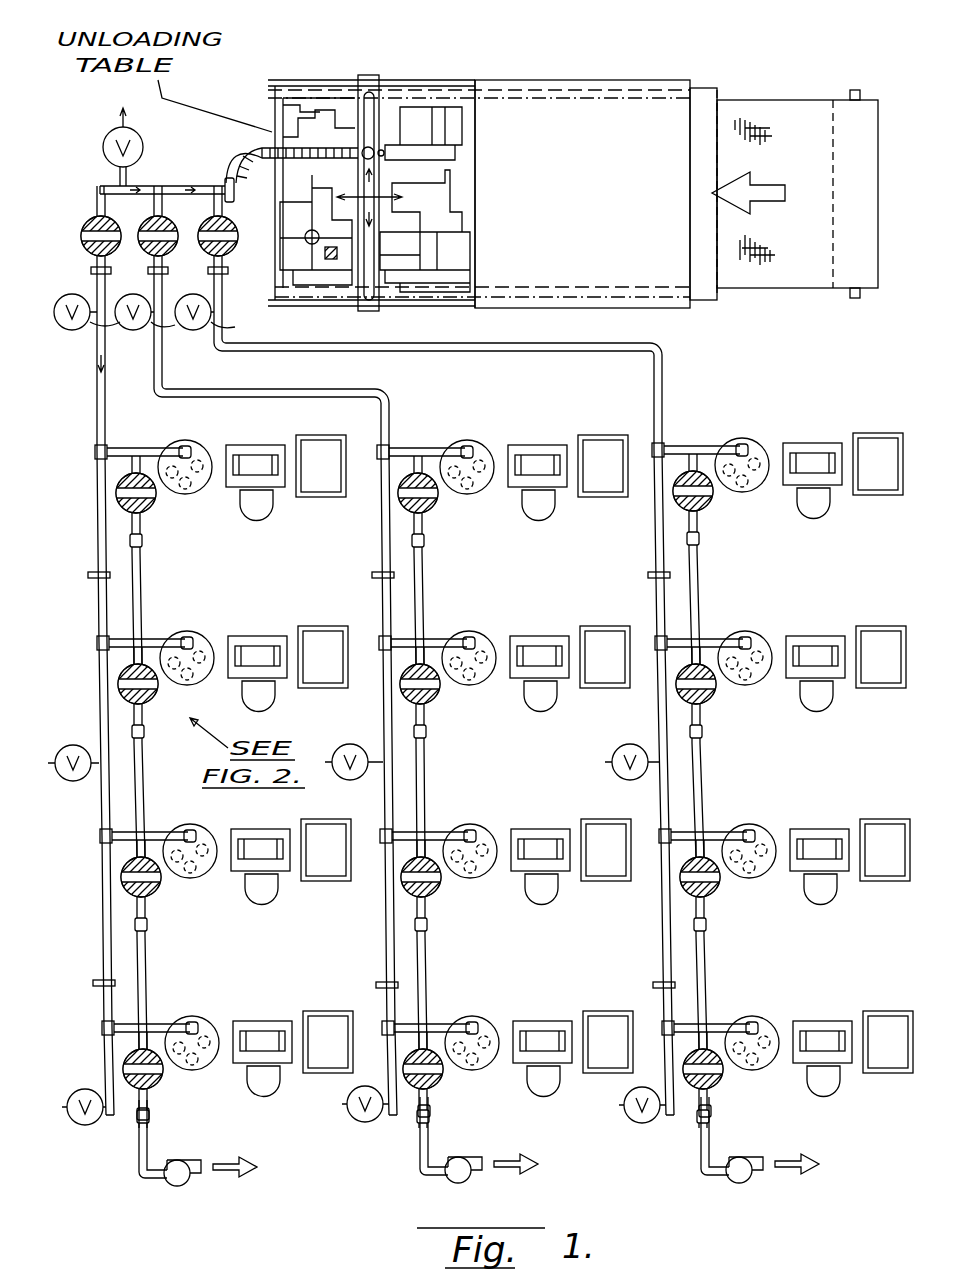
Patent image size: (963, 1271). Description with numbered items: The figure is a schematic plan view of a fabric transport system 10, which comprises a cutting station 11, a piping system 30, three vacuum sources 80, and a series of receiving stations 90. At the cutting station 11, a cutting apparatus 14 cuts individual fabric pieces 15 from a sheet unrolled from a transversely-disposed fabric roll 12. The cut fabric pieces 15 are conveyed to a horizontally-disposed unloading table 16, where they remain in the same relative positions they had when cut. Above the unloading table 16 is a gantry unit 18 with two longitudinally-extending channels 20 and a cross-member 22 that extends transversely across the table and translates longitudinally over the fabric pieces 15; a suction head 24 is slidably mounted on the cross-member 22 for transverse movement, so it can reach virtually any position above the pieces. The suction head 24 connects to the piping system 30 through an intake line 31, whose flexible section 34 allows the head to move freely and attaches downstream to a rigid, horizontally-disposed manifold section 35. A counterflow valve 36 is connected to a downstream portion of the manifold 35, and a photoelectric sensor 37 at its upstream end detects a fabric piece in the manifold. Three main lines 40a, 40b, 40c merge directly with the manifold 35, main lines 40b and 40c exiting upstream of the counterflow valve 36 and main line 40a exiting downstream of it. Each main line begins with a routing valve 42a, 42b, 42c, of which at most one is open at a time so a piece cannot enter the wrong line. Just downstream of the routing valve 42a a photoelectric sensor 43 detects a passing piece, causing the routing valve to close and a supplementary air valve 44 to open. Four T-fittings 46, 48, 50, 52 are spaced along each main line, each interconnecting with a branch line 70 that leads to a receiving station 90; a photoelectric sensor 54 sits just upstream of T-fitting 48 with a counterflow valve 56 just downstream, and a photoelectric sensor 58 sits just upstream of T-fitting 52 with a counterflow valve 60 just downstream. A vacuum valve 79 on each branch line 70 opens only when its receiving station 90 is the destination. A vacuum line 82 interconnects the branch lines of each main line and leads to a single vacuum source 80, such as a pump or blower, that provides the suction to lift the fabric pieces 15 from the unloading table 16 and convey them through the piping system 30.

The fabric transport system 10 is at (560, 78).
The cutting station 11 is at (680, 70).
The fabric roll 12 is at (858, 110).
The cutting apparatus 14 is at (492, 120).
The fabric pieces 15 is at (330, 118).
The unloading table 16 is at (272, 118).
The gantry unit 18 is at (372, 78).
The channels 20 is at (312, 80).
The cross-member 22 is at (388, 290).
The suction head 24 is at (375, 148).
The piping system 30 is at (88, 456).
The intake line 31 is at (92, 145).
The flexible section 34 is at (240, 192).
The manifold section 35 is at (142, 188).
The counterflow valve 36 is at (142, 135).
The photoelectric sensor 37 is at (248, 175).
The main line 40a is at (100, 378).
The main line 40b is at (245, 398).
The main line 40c is at (550, 355).
The routing valve 42a is at (90, 215).
The routing valve 42b is at (175, 222).
The routing valve 42c is at (232, 252).
The photoelectric sensor 43 is at (150, 276).
The supplementary air valve 44 is at (80, 328).
The T-fitting 46 is at (98, 465).
The T-fitting 48 is at (100, 650).
The T-fitting 50 is at (103, 845).
The T-fitting 52 is at (105, 1035).
The photoelectric sensor 54 is at (95, 585).
The counterflow valve 56 is at (78, 783).
The photoelectric sensor 58 is at (100, 985).
The counterflow valve 60 is at (100, 1125).
The branch line 70 is at (138, 455).
The vacuum valve 79 is at (155, 505).
The vacuum source 80 is at (195, 1188).
The vacuum line 82 is at (138, 1172).
The receiving station 90 is at (205, 440).